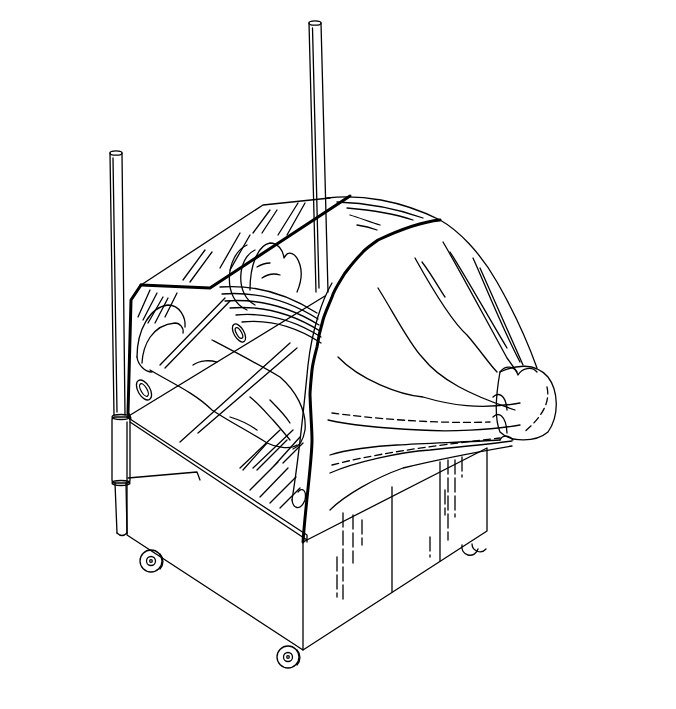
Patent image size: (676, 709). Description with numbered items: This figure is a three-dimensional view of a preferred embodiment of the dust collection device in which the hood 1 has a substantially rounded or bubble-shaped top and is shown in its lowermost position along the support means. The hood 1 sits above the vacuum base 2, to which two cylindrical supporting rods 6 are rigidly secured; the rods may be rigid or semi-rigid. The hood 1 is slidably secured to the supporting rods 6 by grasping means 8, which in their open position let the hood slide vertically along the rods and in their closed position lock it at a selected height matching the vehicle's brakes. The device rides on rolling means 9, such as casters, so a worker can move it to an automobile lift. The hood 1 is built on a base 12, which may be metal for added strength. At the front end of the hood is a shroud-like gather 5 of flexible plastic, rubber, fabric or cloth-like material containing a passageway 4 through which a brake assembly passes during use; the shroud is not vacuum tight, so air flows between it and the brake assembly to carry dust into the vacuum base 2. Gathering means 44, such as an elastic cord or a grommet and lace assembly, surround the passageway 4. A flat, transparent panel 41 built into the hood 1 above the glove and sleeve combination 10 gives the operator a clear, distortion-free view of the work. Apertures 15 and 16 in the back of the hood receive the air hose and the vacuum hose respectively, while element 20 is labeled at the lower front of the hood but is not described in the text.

The hood 1 is at (440, 162).
The vacuum base 2 is at (498, 484).
The passageway 4 is at (530, 407).
The shroud 5 is at (463, 232).
The supporting means 6 is at (322, 72).
The grasping means 8 is at (118, 442).
The rolling means 9 is at (165, 573).
The glove and sleeve combination 10 is at (233, 272).
The base 12 is at (237, 500).
The aperture 15 is at (137, 393).
The aperture 16 is at (232, 330).
The hood front wall edge 20 is at (302, 497).
The transparent panel 41 is at (268, 210).
The gathering means 44 is at (538, 370).